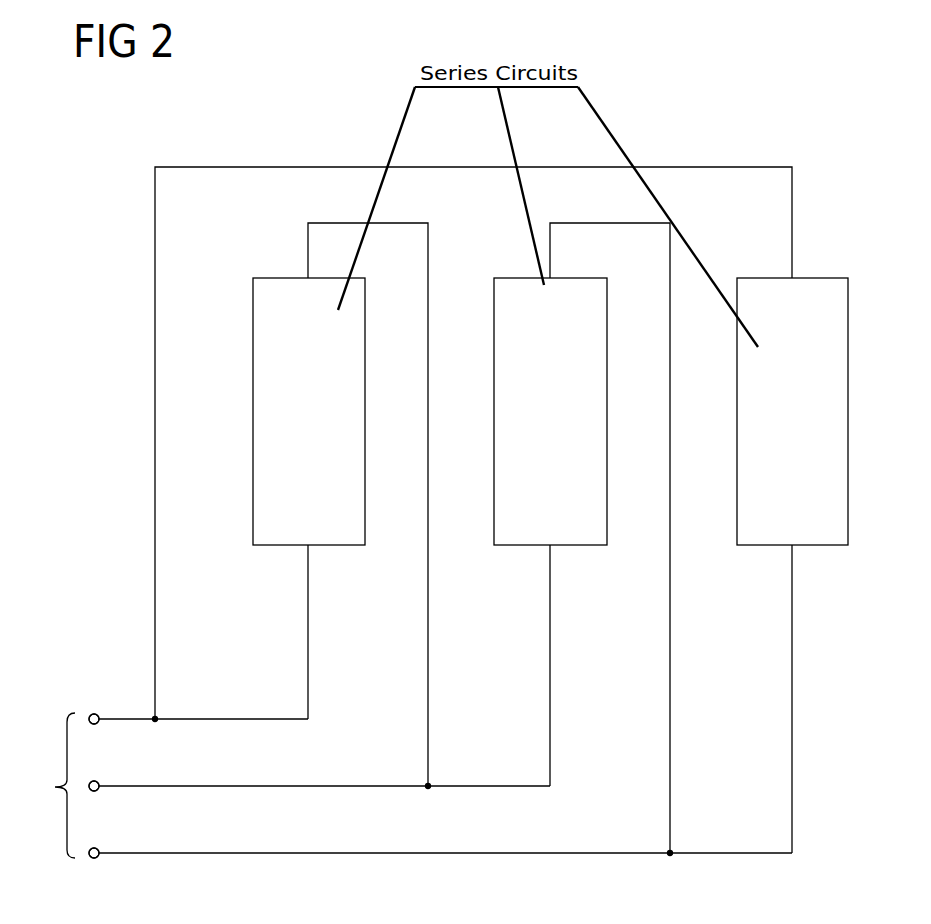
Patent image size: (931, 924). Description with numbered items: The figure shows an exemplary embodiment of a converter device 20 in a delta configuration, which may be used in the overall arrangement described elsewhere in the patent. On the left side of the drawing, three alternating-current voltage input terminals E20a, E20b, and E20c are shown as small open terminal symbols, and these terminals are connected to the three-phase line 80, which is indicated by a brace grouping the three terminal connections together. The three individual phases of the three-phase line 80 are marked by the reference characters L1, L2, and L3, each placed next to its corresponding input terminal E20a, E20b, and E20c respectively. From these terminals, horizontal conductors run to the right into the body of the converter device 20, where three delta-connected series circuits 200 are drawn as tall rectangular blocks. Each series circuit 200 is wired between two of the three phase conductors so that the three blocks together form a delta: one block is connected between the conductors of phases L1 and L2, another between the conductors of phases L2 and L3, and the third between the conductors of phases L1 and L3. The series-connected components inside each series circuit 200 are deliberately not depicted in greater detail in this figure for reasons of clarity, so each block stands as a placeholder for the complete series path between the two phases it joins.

The converter device 20 is at (72, 322).
The series circuit 200 is at (293, 277).
The three-phase line 80 is at (48, 785).
The phase L1 is at (94, 701).
The phase L2 is at (94, 768).
The phase L3 is at (94, 836).
The alternating-current voltage input terminal E20a is at (143, 721).
The alternating-current voltage input terminal E20b is at (143, 788).
The alternating-current voltage input terminal E20c is at (143, 855).